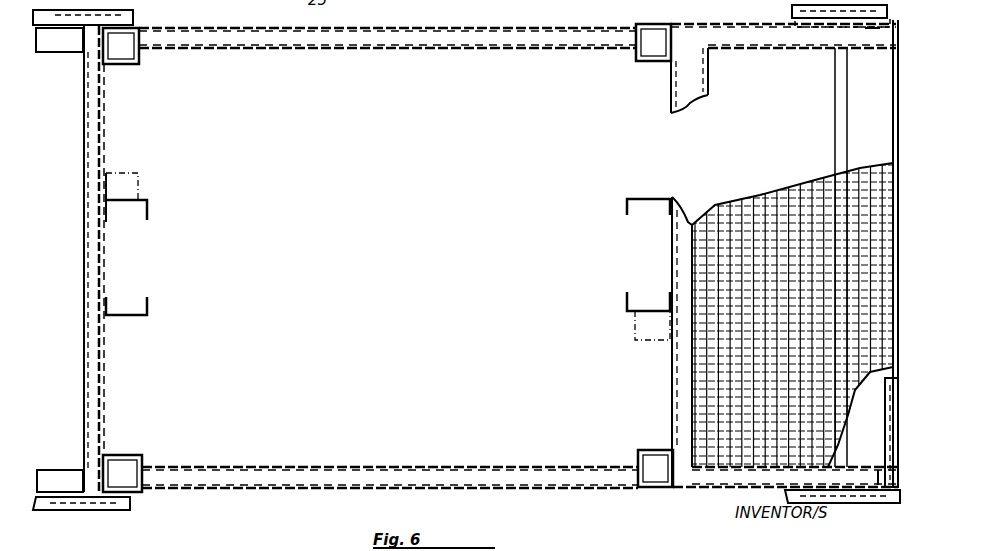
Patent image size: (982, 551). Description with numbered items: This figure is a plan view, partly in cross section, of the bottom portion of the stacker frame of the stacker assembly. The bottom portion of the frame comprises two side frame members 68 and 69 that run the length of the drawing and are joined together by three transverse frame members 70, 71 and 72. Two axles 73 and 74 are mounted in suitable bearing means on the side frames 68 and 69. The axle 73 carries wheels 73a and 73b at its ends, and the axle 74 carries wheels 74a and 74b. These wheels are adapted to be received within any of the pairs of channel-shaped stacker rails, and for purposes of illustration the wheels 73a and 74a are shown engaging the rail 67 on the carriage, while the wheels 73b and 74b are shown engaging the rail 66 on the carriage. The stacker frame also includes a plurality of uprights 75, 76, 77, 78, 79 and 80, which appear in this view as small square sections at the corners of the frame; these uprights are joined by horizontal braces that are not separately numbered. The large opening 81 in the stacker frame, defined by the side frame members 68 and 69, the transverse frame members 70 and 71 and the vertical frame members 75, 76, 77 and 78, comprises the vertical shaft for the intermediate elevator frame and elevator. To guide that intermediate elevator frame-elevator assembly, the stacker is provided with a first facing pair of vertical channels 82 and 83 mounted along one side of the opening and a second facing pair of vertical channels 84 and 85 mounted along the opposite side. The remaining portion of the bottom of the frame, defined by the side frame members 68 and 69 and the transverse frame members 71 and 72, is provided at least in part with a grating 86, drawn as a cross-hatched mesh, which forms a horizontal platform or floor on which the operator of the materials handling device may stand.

The rail 66 is at (120, 508).
The rail 67 is at (125, 14).
The side frame member 68 is at (312, 48).
The side frame member 69 is at (340, 476).
The transverse frame member 70 is at (105, 392).
The transverse frame member 71 is at (675, 378).
The transverse frame member 72 is at (886, 408).
The axle 73 is at (84, 236).
The wheel 73a is at (57, 52).
The wheel 73b is at (72, 470).
The axle 74 is at (835, 110).
The wheel 74a is at (815, 30).
The wheel 74b is at (752, 482).
The upright 75 is at (122, 66).
The upright 76 is at (130, 455).
The upright 77 is at (648, 50).
The upright 78 is at (655, 450).
The upright 79 is at (870, 38).
The upright 80 is at (880, 467).
The opening 81 is at (364, 257).
The vertical channel 82 is at (150, 212).
The vertical channel 83 is at (150, 308).
The vertical channel 84 is at (625, 203).
The vertical channel 85 is at (627, 297).
The grating 86 is at (783, 190).